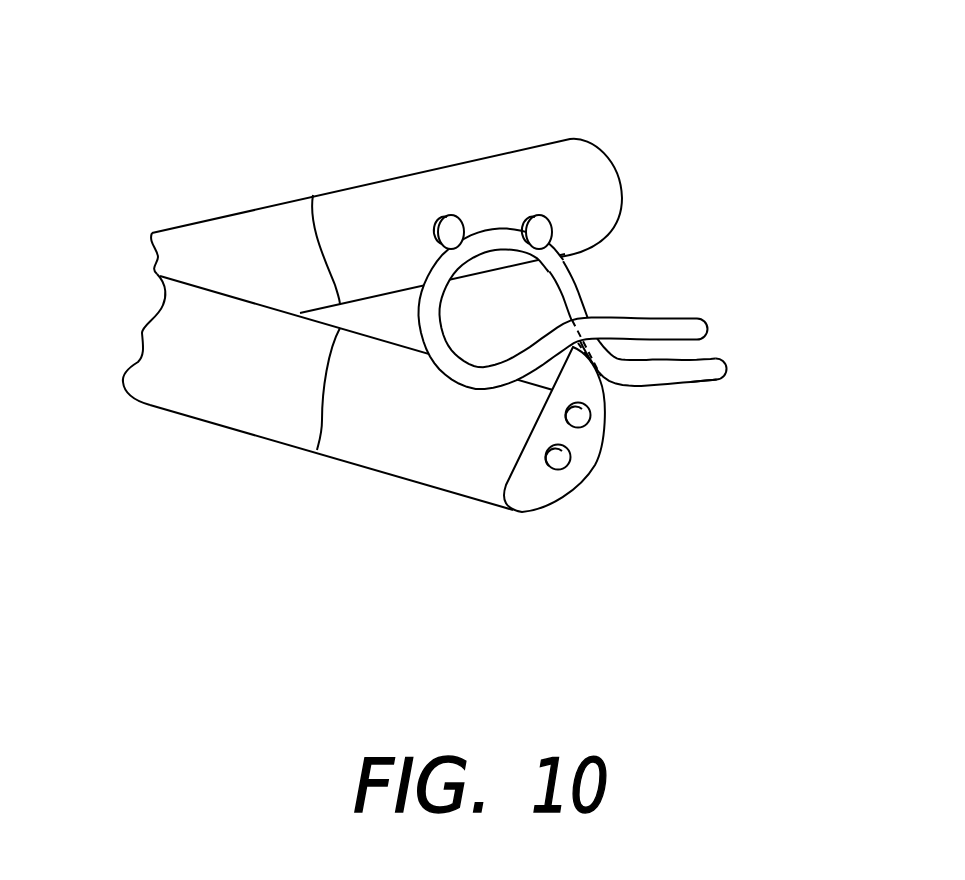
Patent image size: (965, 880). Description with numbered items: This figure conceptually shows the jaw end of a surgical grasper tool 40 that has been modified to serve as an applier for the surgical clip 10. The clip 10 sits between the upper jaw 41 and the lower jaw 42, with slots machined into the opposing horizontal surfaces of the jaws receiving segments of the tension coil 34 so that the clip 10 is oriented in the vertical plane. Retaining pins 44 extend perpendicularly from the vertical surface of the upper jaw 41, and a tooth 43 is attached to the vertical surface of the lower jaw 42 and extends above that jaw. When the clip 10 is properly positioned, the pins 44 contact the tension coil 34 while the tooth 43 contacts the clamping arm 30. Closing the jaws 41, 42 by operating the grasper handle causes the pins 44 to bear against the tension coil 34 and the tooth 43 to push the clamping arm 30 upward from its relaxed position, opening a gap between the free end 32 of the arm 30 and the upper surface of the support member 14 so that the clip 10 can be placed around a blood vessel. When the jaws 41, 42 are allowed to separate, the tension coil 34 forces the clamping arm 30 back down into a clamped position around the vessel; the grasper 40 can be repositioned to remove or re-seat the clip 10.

The clip 10 is at (580, 303).
The support member 14 is at (707, 320).
The clamping arm 30 is at (699, 381).
The free end 32 is at (727, 363).
The tension coil 34 is at (570, 283).
The surgical grasper tool 40 is at (240, 230).
The upper jaw 41 is at (390, 197).
The lower jaw 42 is at (413, 453).
The tooth 43 is at (590, 388).
The retaining pins 44 is at (537, 213).